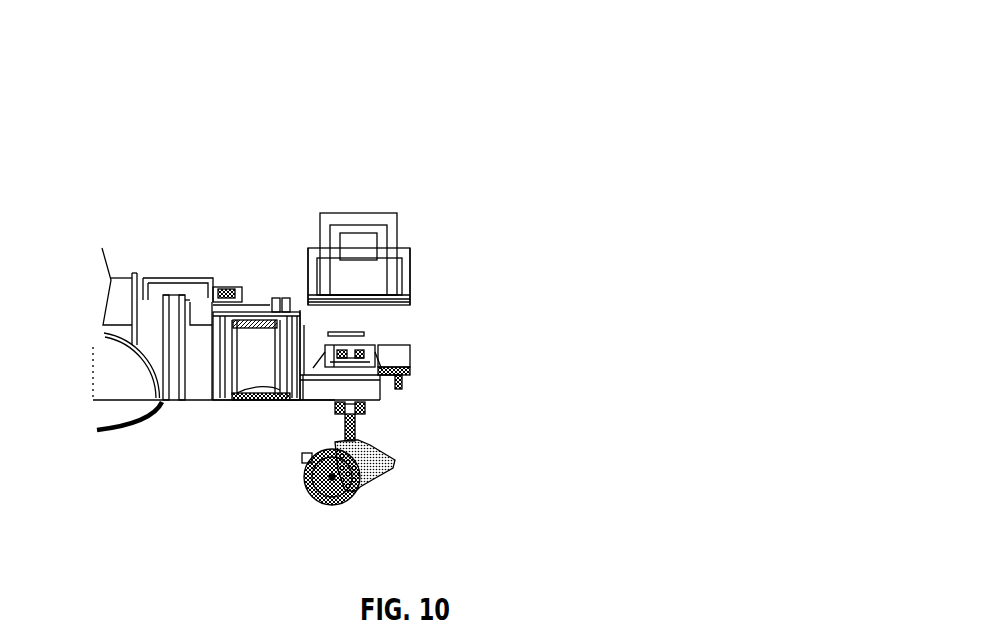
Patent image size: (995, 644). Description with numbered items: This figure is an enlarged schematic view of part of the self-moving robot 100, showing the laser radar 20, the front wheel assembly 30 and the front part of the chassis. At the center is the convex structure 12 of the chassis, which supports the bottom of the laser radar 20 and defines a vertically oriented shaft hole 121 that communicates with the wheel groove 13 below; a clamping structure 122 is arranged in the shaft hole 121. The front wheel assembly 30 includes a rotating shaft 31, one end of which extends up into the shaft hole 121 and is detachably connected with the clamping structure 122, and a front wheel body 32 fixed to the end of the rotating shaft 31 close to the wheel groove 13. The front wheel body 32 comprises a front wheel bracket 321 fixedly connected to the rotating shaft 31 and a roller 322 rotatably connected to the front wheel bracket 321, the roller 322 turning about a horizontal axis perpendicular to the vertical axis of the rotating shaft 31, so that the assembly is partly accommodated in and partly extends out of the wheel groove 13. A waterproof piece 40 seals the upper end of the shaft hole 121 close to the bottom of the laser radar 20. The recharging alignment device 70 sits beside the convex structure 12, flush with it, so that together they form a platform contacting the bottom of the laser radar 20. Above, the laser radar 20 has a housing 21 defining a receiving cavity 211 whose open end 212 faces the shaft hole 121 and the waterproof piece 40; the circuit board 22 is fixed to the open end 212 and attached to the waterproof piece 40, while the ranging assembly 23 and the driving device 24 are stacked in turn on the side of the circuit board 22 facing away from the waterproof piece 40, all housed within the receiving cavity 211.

The self-moving robot 100 is at (584, 147).
The convex structure 12 is at (392, 347).
The shaft hole 121 is at (350, 343).
The clamping structure 122 is at (325, 400).
The wheel groove 13 is at (352, 376).
The laser radar 20 is at (512, 109).
The housing 21 is at (410, 282).
The receiving cavity 211 is at (343, 333).
The open end 212 is at (364, 343).
The circuit board 22 is at (357, 295).
The ranging assembly 23 is at (358, 237).
The driving device 24 is at (343, 270).
The waterproof piece 40 is at (378, 346).
The recharging alignment device 70 is at (412, 352).
The front wheel assembly 30 is at (481, 413).
The rotating shaft 31 is at (358, 420).
The front wheel body 32 is at (390, 477).
The front wheel bracket 321 is at (362, 487).
The roller 322 is at (320, 493).